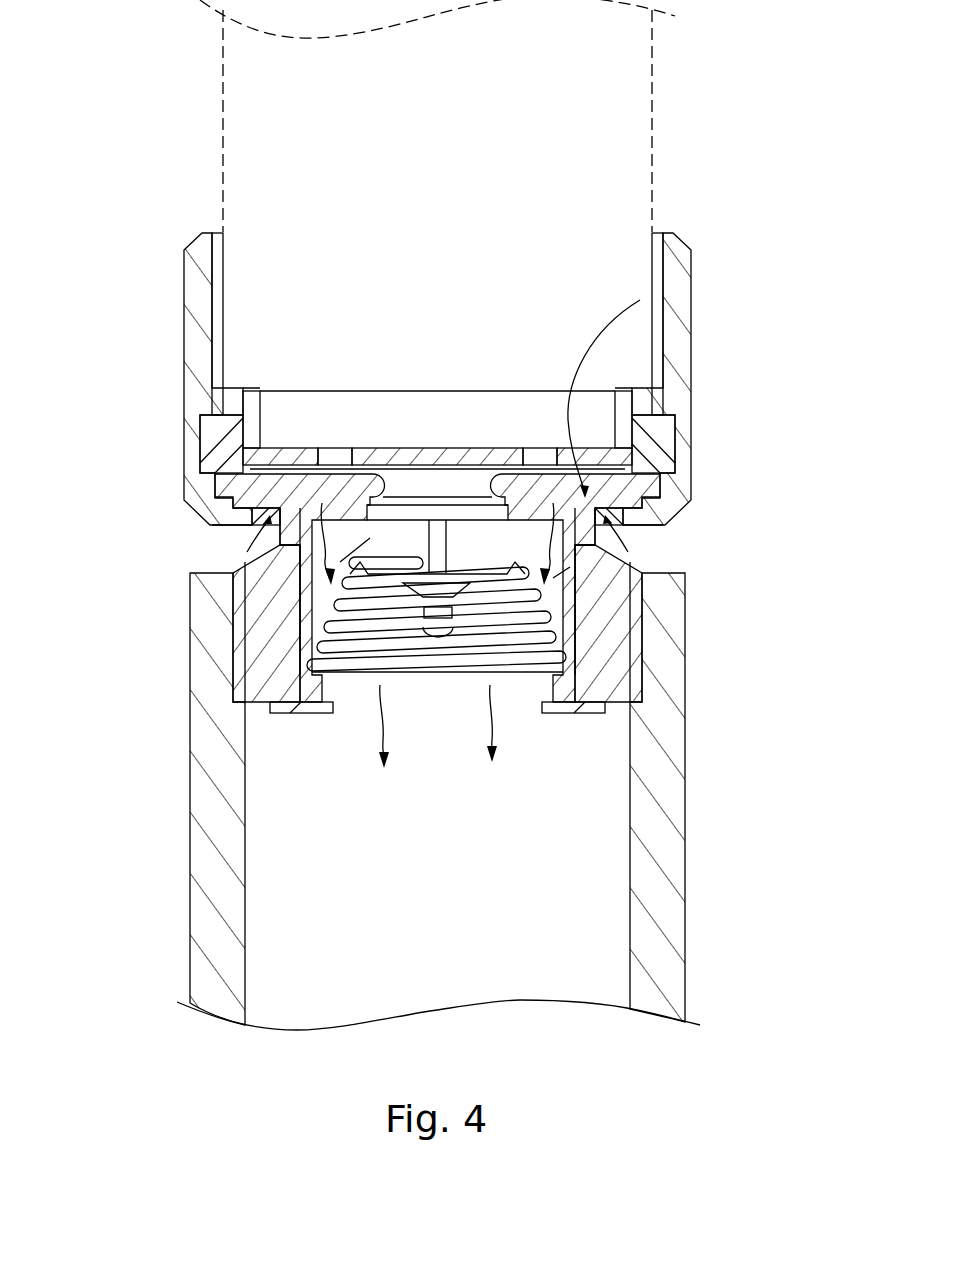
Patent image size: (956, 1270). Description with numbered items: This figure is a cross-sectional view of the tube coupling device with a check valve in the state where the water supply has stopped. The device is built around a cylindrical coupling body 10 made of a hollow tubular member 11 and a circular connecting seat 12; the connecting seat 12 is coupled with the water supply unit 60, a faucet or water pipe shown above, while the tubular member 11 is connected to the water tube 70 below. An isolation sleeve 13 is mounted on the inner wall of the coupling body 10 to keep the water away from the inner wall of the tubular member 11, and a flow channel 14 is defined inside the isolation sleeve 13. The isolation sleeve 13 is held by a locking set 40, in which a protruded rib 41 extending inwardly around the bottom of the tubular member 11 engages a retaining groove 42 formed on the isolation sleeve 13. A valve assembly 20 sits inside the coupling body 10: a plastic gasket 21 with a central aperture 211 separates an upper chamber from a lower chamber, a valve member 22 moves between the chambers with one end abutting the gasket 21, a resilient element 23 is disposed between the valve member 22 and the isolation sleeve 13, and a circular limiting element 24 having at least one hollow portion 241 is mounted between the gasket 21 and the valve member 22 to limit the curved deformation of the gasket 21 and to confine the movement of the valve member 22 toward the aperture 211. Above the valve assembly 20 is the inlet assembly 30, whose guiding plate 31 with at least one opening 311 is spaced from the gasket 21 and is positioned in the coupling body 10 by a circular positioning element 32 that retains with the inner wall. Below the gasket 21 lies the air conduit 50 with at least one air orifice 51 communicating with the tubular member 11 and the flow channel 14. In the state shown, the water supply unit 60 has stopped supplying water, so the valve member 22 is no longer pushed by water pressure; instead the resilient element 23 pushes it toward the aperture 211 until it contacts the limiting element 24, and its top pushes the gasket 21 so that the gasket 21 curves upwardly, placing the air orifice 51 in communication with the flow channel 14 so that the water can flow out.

The coupling body 10 is at (780, 368).
The tubular member 11 is at (665, 507).
The connecting seat 12 is at (680, 358).
The isolation sleeve 13 is at (572, 614).
The flow channel 14 is at (600, 557).
The valve assembly 20 is at (90, 478).
The gasket 21 is at (233, 487).
The aperture 211 is at (457, 497).
The valve member 22 is at (305, 590).
The resilient element 23 is at (318, 665).
The limiting element 24 is at (290, 553).
The hollow portion 241 is at (262, 543).
The inlet assembly 30 is at (96, 307).
The guiding plate 31 is at (295, 454).
The opening 311 is at (333, 454).
The positioning element 32 is at (250, 397).
The locking set 40 is at (106, 708).
The protruded rib 41 is at (325, 688).
The retaining groove 42 is at (340, 707).
The air conduit 50 is at (650, 292).
The air orifice 51 is at (245, 462).
The water supply unit 60 is at (652, 148).
The water tube 70 is at (690, 798).